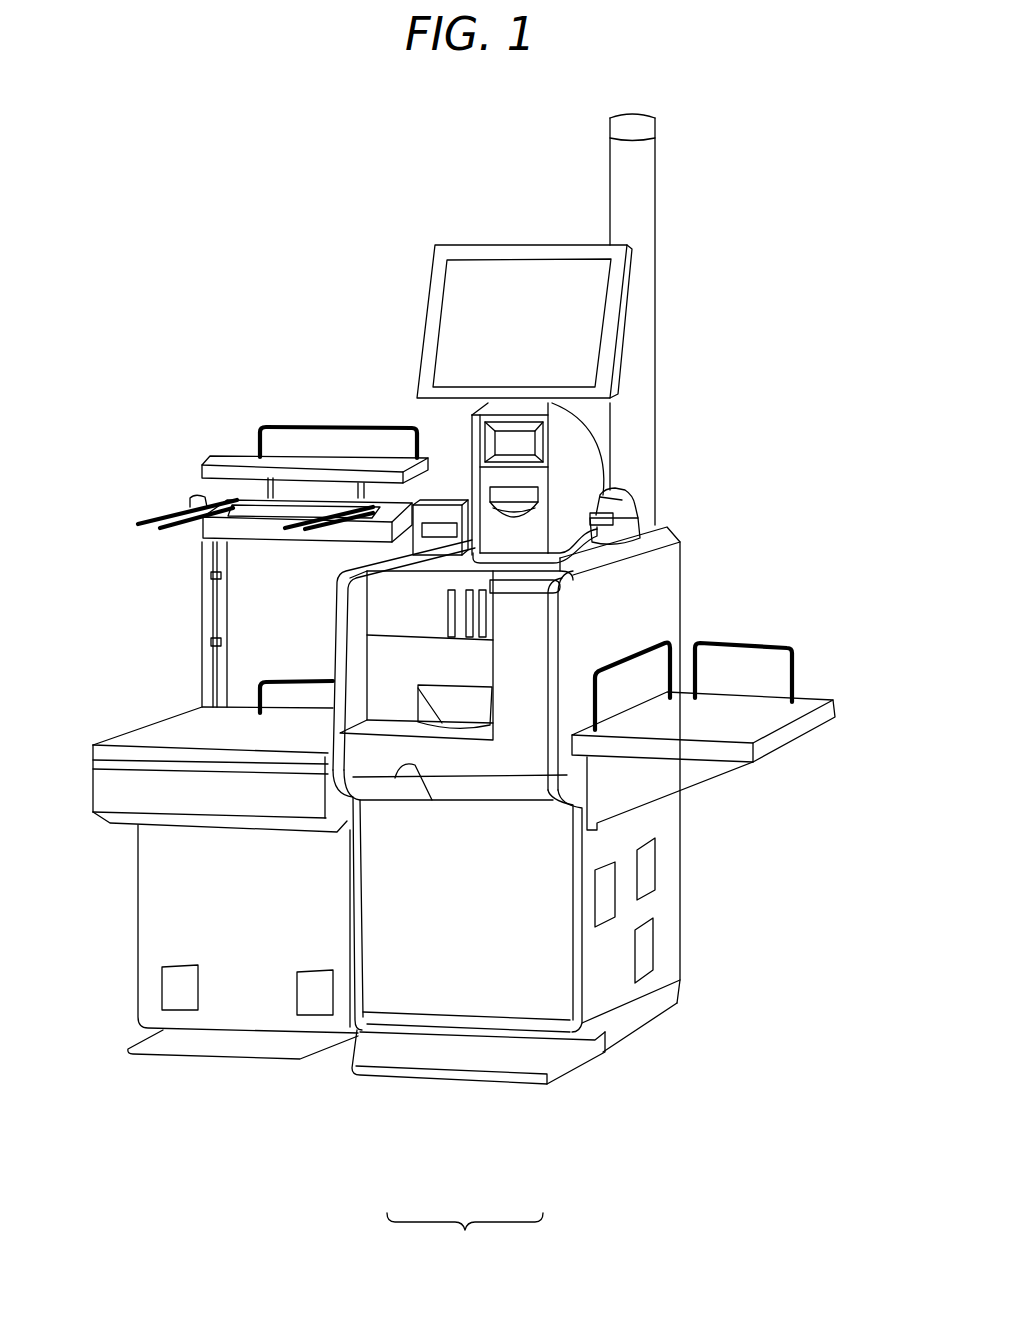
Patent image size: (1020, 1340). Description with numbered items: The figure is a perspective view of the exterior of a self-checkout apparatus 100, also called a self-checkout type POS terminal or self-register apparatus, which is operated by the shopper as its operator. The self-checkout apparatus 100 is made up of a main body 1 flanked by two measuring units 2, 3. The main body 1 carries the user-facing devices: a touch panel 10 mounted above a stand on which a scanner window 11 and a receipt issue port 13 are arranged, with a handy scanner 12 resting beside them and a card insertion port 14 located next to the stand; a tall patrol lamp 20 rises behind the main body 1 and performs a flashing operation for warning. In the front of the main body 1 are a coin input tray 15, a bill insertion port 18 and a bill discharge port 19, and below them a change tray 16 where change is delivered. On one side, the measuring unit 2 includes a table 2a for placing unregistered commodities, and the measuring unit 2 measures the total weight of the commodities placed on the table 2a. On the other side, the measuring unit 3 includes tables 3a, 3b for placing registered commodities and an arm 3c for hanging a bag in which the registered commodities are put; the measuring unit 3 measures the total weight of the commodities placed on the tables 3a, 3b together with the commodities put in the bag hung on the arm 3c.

The self-checkout apparatus 100 is at (465, 1241).
The main body 1 is at (462, 1092).
The measuring unit 2 is at (757, 793).
The table 2a is at (768, 718).
The measuring unit 3 is at (280, 1077).
The table 3a is at (170, 727).
The table 3b is at (247, 458).
The arm 3c is at (140, 525).
The touch panel 10 is at (503, 273).
The scanner window 11 is at (518, 445).
The handy scanner 12 is at (622, 497).
The receipt issue port 13 is at (522, 497).
The card insertion port 14 is at (440, 530).
The coin input tray 15 is at (513, 592).
The change tray 16 is at (445, 735).
The bill insertion port 18 is at (475, 637).
The bill discharge port 19 is at (450, 612).
The patrol lamp 20 is at (648, 130).